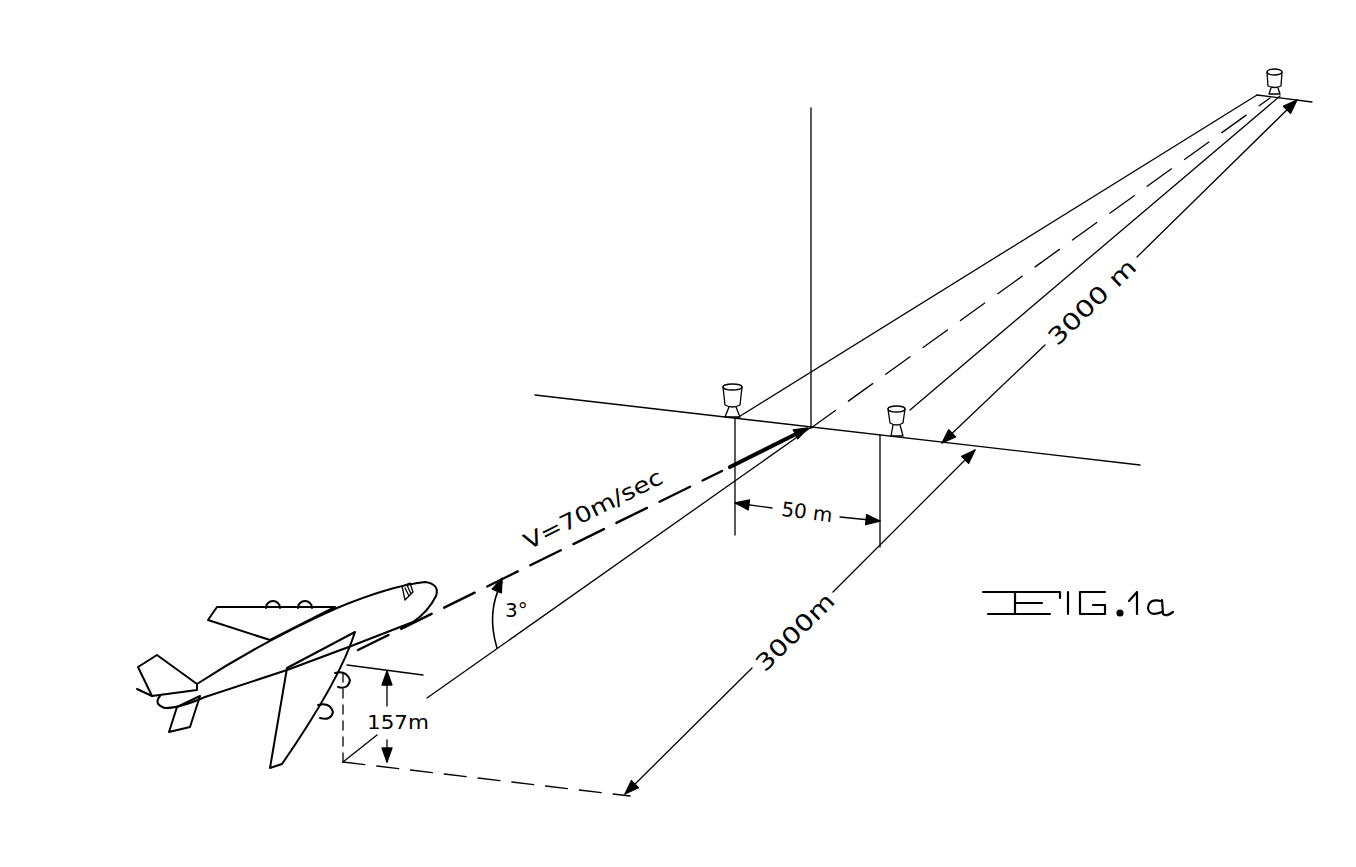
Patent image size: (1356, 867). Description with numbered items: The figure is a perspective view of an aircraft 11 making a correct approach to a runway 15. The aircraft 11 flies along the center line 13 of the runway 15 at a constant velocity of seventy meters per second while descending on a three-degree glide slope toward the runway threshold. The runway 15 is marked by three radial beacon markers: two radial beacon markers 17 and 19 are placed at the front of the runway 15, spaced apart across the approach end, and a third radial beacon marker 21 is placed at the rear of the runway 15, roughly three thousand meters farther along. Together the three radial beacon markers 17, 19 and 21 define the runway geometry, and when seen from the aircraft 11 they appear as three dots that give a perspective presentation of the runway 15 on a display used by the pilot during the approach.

The aircraft 11 is at (370, 603).
The center line 13 is at (608, 572).
The runway 15 is at (1055, 217).
The radial beacon marker 17 is at (746, 393).
The radial beacon marker 19 is at (907, 417).
The radial beacon marker 21 is at (1283, 74).